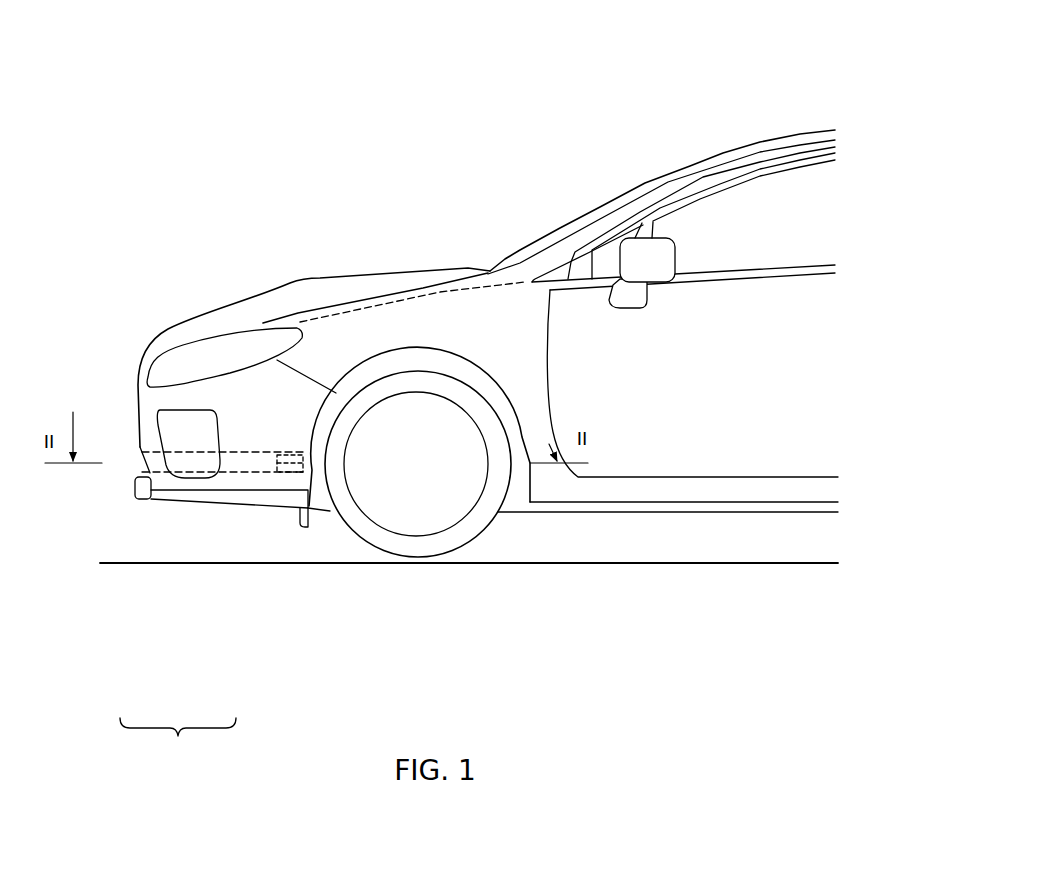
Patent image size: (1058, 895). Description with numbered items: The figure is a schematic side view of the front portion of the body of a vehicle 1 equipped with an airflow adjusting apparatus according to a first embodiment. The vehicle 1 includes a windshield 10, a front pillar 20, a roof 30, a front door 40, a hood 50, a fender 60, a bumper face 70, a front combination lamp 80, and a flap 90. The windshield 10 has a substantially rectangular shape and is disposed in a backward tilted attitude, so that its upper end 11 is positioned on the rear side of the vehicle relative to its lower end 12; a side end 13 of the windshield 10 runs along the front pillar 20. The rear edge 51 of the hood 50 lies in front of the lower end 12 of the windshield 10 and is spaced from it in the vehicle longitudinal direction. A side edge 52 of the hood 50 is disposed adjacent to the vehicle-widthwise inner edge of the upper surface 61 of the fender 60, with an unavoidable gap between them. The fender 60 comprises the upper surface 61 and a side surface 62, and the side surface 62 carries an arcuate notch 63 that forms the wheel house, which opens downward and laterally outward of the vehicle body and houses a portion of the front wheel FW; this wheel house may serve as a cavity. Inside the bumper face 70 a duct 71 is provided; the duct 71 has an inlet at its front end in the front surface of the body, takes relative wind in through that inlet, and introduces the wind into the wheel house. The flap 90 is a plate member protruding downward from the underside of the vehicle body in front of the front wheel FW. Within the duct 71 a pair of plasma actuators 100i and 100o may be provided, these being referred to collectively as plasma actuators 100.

The vehicle 1 is at (238, 134).
The windshield 10 is at (645, 183).
The upper end 11 is at (723, 153).
The lower end 12 is at (490, 272).
The side end 13 is at (668, 182).
The front pillar 20 is at (838, 150).
The roof 30 is at (793, 135).
The front door 40 is at (740, 385).
The hood 50 is at (317, 280).
The rear edge 51 is at (468, 268).
The side edge 52 is at (298, 313).
The fender 60 is at (395, 335).
The upper surface 61 is at (423, 288).
The side surface 62 is at (500, 345).
The arcuate notch 63 is at (420, 357).
The bumper face 70 is at (147, 488).
The duct 71 is at (202, 472).
The front combination lamp 80 is at (183, 345).
The flap 90 is at (302, 522).
The front wheel FW is at (378, 552).
The plasma actuators 100 is at (225, 630).
The plasma actuator 100i is at (285, 470).
The plasma actuator 100o is at (243, 588).